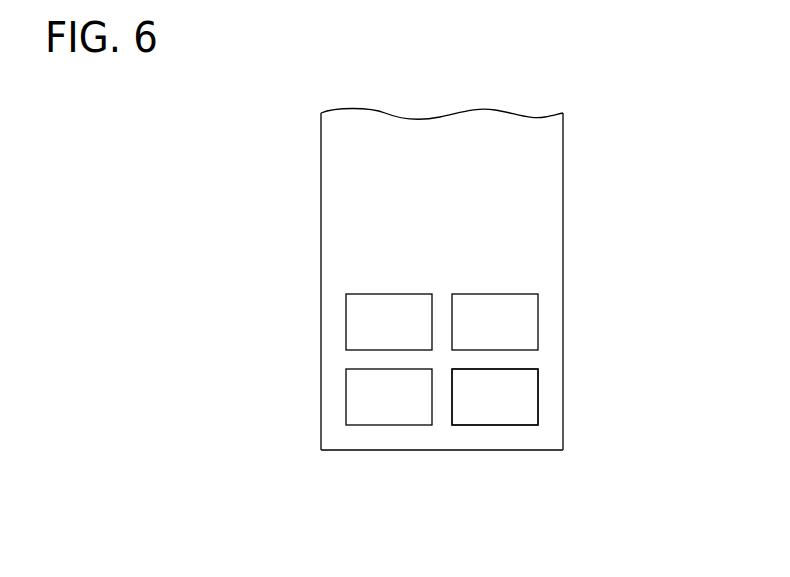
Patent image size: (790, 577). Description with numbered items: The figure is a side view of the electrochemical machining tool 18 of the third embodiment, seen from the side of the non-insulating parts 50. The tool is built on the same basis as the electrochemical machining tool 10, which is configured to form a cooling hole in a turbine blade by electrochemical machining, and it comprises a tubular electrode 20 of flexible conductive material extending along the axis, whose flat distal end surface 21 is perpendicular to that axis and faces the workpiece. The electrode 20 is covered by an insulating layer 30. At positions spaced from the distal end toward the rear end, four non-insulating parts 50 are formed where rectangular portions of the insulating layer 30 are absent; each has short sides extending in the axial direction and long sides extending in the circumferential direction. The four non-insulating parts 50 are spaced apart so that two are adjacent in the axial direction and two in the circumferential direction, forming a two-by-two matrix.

The electrochemical machining tool 10 is at (575, 180).
The electrochemical machining tool 18 is at (597, 118).
The electrode 20 is at (485, 408).
The distal end surface 21 is at (529, 450).
The insulating layer 30 is at (538, 231).
The non-insulating part 50 is at (346, 323).